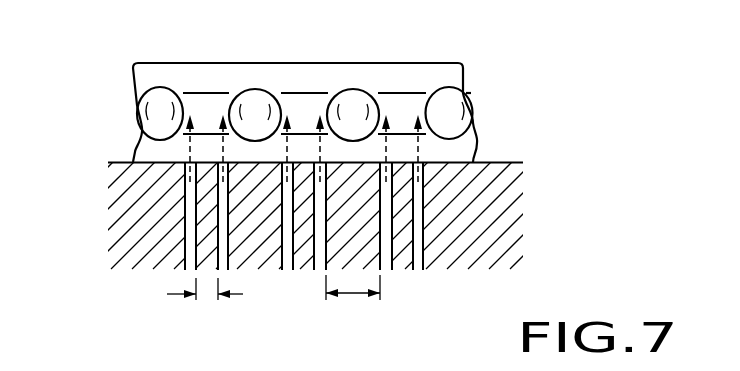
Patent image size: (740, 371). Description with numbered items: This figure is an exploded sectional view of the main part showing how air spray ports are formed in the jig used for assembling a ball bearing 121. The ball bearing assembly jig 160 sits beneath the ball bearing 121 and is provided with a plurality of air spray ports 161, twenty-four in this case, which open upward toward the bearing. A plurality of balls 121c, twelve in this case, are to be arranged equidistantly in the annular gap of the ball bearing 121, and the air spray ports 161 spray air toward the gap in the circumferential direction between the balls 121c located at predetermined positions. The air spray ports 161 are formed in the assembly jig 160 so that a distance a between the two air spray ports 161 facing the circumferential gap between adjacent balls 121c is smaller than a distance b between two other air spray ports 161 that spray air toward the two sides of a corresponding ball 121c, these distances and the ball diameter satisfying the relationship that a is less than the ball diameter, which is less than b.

The ball bearing 121 is at (507, 110).
The balls 121c is at (258, 107).
The ball bearing assembly jig 160 is at (482, 245).
The air spray ports 161 is at (220, 221).